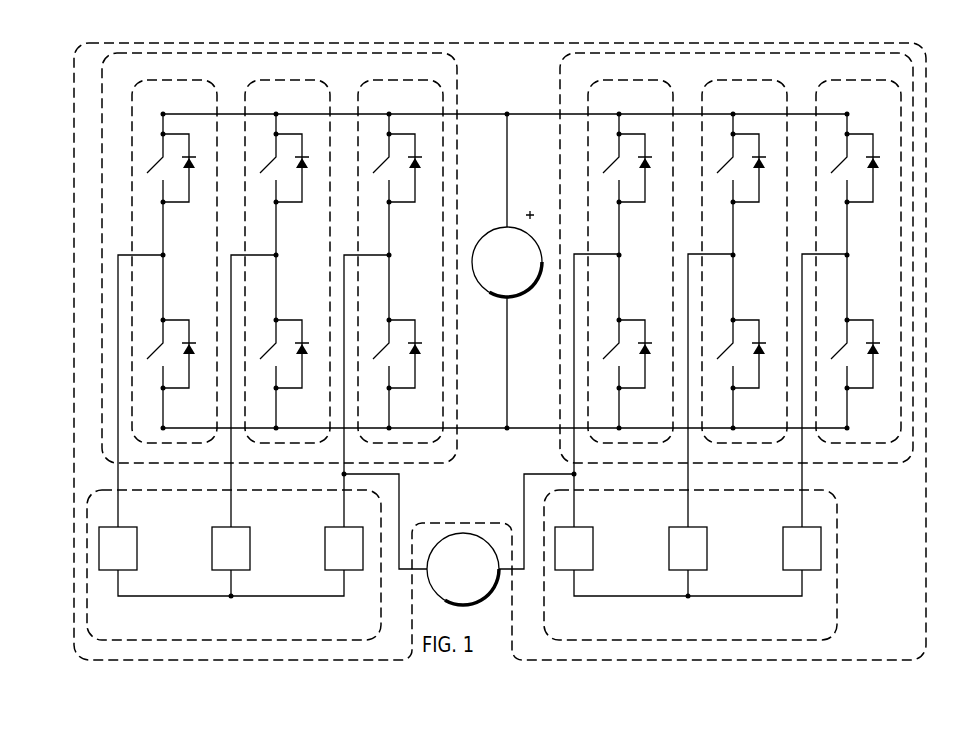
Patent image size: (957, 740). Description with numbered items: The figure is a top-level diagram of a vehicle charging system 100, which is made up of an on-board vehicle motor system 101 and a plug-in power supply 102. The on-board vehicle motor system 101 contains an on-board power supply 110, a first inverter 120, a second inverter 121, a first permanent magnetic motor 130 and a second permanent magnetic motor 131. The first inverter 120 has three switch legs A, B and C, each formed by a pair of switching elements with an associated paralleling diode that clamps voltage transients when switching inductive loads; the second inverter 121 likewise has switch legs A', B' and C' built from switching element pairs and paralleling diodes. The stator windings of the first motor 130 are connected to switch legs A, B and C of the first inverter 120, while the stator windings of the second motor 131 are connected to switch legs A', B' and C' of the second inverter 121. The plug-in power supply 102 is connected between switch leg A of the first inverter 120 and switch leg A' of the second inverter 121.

The vehicle charging system 100 is at (904, 43).
The on-board vehicle motor system 101 is at (505, 238).
The plug-in power supply 102 is at (471, 599).
The on-board power supply 110 is at (519, 292).
The first inverter 120 is at (457, 92).
The second inverter 121 is at (560, 92).
The first permanent magnetic motor 130 is at (300, 641).
The second permanent magnetic motor 131 is at (777, 641).